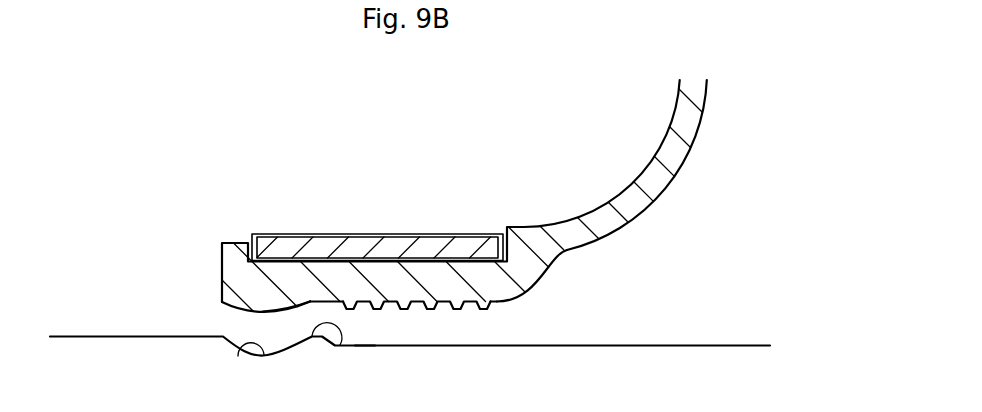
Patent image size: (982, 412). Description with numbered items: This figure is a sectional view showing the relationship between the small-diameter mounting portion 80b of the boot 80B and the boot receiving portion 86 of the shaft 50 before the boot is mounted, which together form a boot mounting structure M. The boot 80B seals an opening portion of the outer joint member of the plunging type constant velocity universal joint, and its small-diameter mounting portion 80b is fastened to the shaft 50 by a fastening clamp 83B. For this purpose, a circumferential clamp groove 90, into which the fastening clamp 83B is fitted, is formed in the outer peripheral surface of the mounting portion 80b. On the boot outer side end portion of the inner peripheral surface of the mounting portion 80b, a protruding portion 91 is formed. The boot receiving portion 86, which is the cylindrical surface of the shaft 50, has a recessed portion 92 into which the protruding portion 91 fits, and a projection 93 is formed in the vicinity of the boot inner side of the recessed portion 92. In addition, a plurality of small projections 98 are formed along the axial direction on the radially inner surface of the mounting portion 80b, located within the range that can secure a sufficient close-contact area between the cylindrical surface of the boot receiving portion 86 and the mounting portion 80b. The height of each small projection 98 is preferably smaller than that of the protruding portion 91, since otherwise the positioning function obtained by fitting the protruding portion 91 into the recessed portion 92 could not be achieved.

The shaft 50 is at (692, 344).
The boot 80B is at (643, 172).
The small-diameter mounting portion 80b is at (410, 286).
The fastening clamp 83B is at (452, 233).
The boot receiving portion 86 is at (364, 345).
The circumferential clamp groove 90 is at (317, 260).
The protruding portion 91 is at (278, 303).
The recessed portion 92 is at (238, 356).
The projection 93 is at (340, 345).
The small projection 98 is at (401, 310).
The boot mounting structure M is at (222, 318).